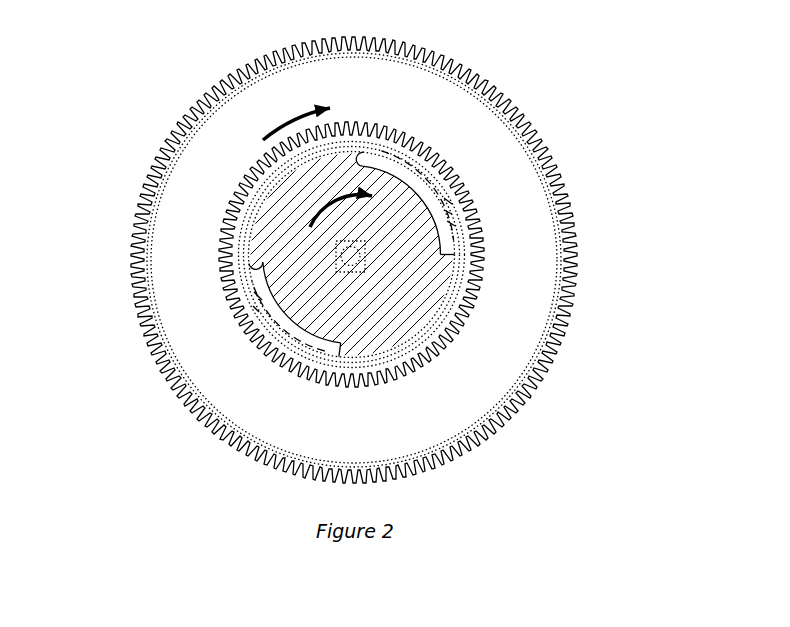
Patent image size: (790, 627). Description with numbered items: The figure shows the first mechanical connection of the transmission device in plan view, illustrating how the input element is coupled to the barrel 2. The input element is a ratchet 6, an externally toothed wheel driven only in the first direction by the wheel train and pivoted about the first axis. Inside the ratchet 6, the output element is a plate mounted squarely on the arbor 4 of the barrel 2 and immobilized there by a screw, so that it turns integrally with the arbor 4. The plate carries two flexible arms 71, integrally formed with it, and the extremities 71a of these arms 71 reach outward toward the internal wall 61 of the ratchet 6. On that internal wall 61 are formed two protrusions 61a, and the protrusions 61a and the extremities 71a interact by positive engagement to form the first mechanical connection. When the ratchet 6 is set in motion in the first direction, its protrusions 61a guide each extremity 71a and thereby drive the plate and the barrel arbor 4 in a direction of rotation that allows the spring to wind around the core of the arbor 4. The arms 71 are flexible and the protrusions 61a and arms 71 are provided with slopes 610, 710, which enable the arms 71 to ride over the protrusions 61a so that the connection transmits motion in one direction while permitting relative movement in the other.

The barrel 2 is at (172, 116).
The arbor 4 is at (365, 270).
The ratchet 6 is at (468, 268).
The internal wall 61 is at (425, 170).
The protrusion 61a is at (452, 202).
The slope 610 is at (452, 217).
The arm 71 is at (399, 163).
The extremity of arm 71a is at (453, 230).
The slope 710 is at (252, 299).